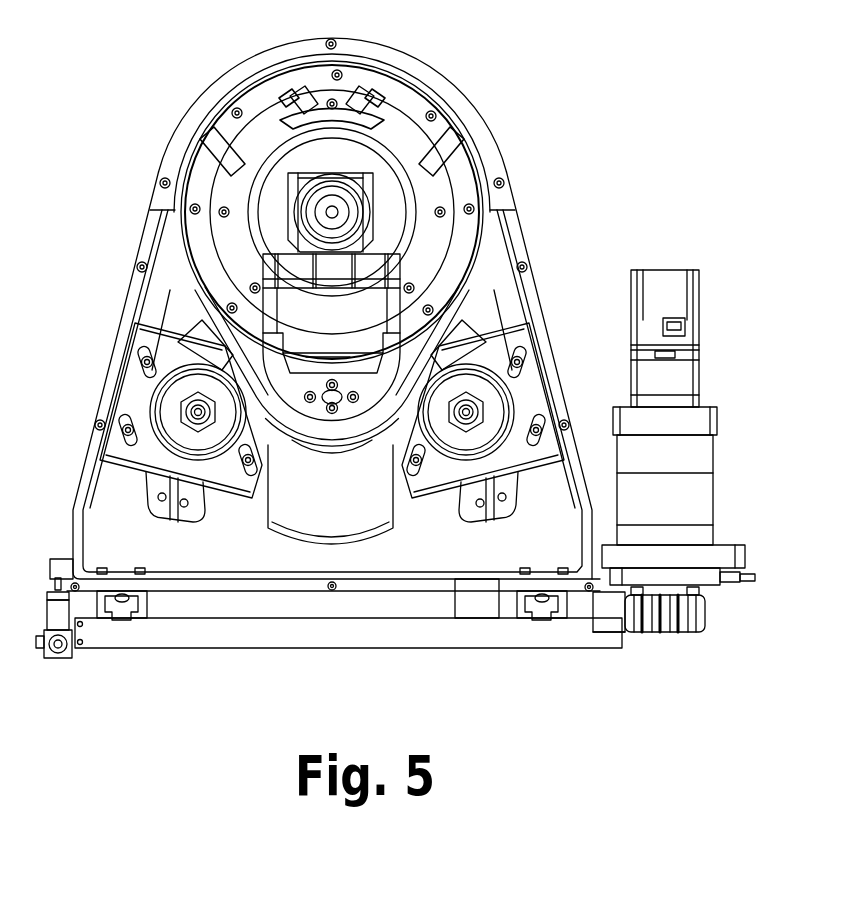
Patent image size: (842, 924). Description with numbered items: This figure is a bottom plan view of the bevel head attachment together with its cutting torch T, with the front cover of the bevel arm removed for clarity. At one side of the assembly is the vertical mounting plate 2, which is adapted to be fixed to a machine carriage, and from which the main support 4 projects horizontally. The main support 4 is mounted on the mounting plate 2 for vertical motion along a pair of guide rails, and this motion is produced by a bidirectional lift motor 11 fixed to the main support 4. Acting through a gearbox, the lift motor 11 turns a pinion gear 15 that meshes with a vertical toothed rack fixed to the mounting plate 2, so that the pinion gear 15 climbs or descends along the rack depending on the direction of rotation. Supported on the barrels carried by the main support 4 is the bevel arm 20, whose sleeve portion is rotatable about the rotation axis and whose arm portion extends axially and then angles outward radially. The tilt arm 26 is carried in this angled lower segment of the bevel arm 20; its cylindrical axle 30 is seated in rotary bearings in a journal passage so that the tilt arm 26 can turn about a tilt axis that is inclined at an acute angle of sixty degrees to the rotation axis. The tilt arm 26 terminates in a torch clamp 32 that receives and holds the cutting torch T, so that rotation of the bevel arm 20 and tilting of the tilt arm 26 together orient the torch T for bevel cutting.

The mounting plate 2 is at (307, 642).
The main support 4 is at (80, 486).
The lift motor 11 is at (668, 276).
The pinion gear 15 is at (704, 617).
The bevel arm 20 is at (270, 490).
The tilt arm 26 is at (346, 350).
The cylindrical axle 30 is at (335, 446).
The torch clamp 32 is at (367, 216).
The cutting torch T is at (332, 203).